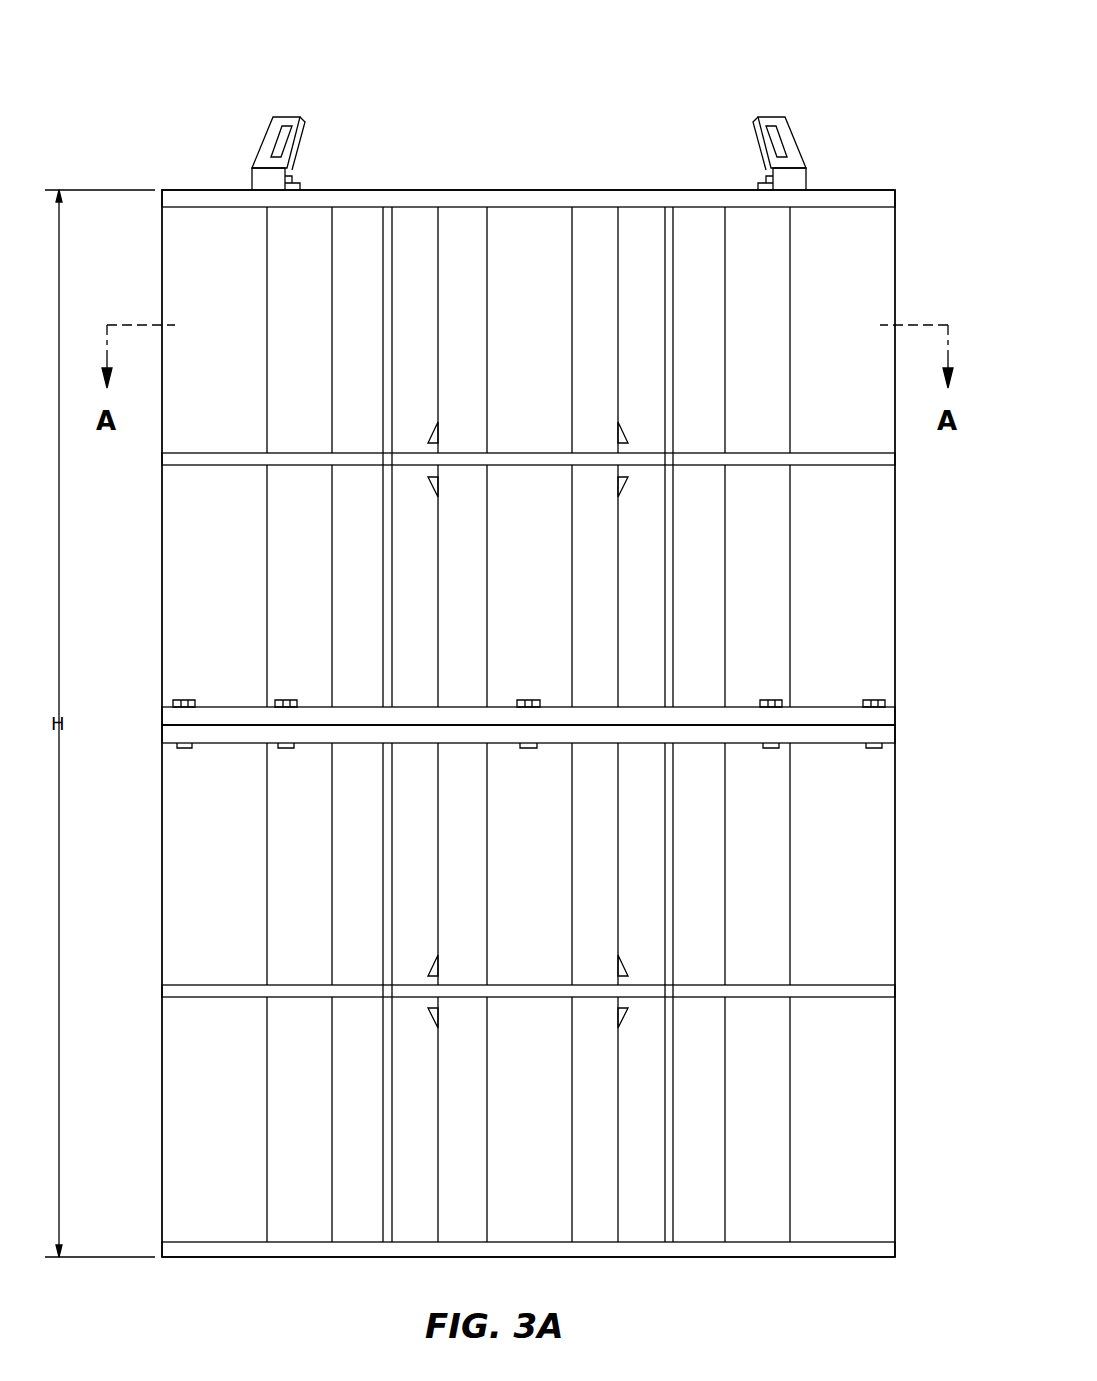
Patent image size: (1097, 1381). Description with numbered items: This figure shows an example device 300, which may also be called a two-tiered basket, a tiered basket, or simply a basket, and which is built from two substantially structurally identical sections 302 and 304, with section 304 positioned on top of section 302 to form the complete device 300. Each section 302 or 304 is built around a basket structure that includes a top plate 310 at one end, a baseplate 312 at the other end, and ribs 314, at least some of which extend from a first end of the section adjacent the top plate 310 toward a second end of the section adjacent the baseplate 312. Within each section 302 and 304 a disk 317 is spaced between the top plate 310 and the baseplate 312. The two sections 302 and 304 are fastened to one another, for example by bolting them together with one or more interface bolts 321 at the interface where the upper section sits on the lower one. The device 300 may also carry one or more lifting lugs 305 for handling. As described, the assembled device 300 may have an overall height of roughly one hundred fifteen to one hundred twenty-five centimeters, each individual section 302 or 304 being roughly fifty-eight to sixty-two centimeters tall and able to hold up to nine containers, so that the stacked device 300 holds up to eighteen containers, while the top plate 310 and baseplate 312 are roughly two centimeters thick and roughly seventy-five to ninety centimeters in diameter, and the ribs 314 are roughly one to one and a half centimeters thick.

The device 300 is at (828, 48).
The section 302 is at (226, 1085).
The section 304 is at (226, 570).
The lifting lug 305 is at (268, 133).
The top plate 310 is at (896, 192).
The baseplate 312 is at (889, 715).
The rib 314 is at (393, 223).
The disk 317 is at (890, 462).
The interface bolt 321 is at (276, 703).